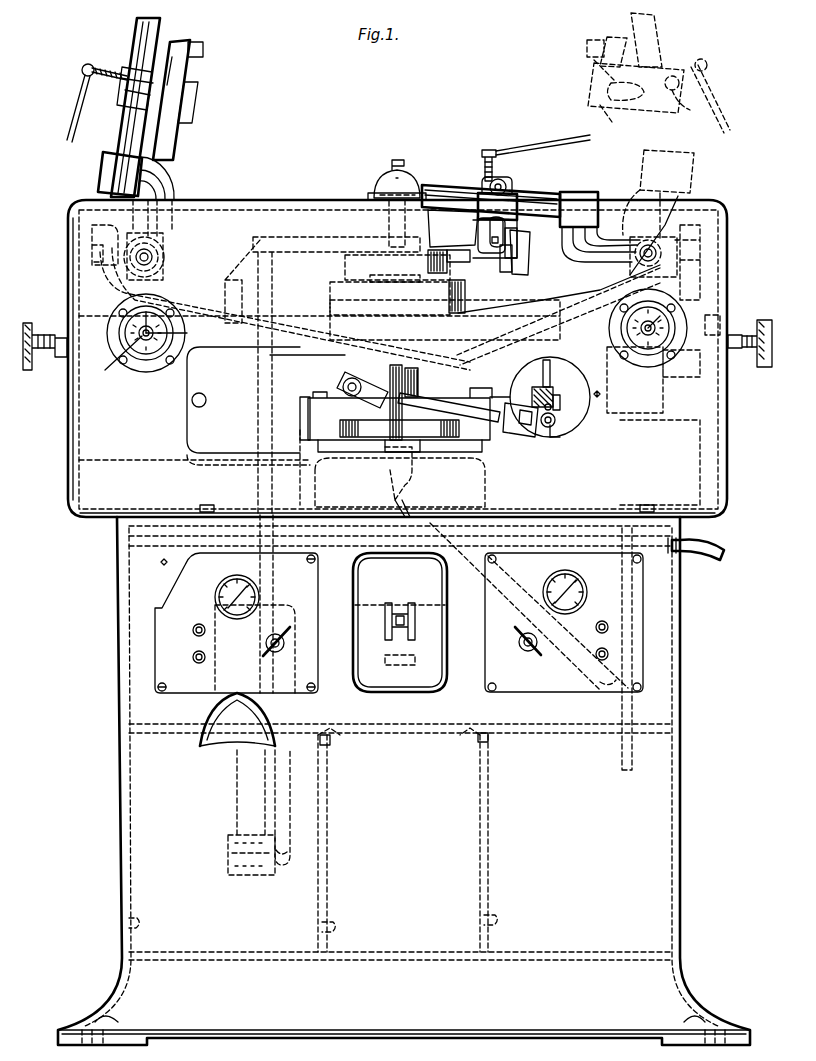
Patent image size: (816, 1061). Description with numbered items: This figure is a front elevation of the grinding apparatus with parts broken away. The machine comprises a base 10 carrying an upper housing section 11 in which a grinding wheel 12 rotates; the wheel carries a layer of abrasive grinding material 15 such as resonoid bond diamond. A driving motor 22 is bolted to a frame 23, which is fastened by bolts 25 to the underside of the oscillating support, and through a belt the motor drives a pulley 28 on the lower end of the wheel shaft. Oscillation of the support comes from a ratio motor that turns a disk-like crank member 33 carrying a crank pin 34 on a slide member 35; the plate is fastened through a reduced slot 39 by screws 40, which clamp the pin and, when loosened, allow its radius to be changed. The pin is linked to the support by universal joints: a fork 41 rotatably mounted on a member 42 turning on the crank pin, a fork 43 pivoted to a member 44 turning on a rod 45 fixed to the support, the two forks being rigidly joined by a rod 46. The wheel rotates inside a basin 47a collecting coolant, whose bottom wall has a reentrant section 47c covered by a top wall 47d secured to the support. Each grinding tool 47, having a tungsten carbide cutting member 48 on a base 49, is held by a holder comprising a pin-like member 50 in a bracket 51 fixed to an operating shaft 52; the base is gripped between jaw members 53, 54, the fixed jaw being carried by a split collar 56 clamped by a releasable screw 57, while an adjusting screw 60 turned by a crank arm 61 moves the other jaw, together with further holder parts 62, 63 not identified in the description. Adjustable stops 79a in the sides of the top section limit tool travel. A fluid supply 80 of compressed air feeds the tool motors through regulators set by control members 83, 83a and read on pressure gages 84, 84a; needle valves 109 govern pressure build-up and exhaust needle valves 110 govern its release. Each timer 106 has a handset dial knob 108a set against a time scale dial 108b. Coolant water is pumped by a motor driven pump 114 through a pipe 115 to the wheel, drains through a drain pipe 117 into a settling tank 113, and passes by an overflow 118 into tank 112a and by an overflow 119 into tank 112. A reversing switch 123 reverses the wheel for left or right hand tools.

The base 10 is at (117, 820).
The upper housing section 11 is at (68, 484).
The grinding wheel 12 is at (345, 265).
The abrasive grinding material 15 is at (360, 252).
The driving motor 22 is at (345, 650).
The frame 23 is at (305, 445).
The bolts 25 is at (322, 405).
The pulley 28 is at (368, 440).
The crank member 33 is at (585, 415).
The crank pin 34 is at (552, 427).
The slide member 35 is at (560, 393).
The reduced slot 39 is at (552, 366).
The screws 40 is at (551, 405).
The fork 41 is at (534, 395).
The member 42 is at (525, 430).
The fork 43 is at (392, 365).
The member 44 is at (360, 382).
The rod 45 is at (343, 385).
The rod 46 is at (440, 395).
The grinding tool 47 is at (180, 40).
The basin 47a is at (192, 305).
The reentrant section 47c is at (345, 330).
The top wall 47d is at (468, 303).
The cutting member 48 is at (462, 262).
The base 49 is at (186, 75).
The pin-like member 50 is at (140, 40).
The bracket 51 is at (170, 183).
The operating shaft 52 is at (162, 252).
The jaw member 53 is at (198, 110).
The jaw member 54 is at (140, 108).
The split collar 56 is at (480, 190).
The releasable screw 57 is at (506, 180).
The adjusting screw 60 is at (106, 60).
The crank arm 61 is at (72, 107).
The bracket 62 is at (486, 240).
The plate 63 is at (518, 236).
The adjustable stop 79a is at (48, 350).
The source of fluid supply 80 is at (718, 560).
The control member 83 is at (263, 652).
The control member 83a is at (526, 652).
The pressure gage 84 is at (217, 600).
The pressure gage 84a is at (580, 580).
The time element mechanism 106 is at (147, 358).
The handset dial knob 108a is at (187, 333).
The time scale dial 108b is at (109, 356).
The adjustable needle valve 109 is at (193, 631).
The exhaust needle valve 110 is at (193, 658).
The settling tank 112 is at (126, 915).
The settling tank 112a is at (320, 922).
The settling tank 113 is at (482, 913).
The motor driven pump 114 is at (236, 812).
The pipe 115 is at (282, 796).
The drain pipe 117 is at (415, 510).
The overflow 118 is at (488, 737).
The overflow 119 is at (332, 738).
The reversing switch 123 is at (398, 610).